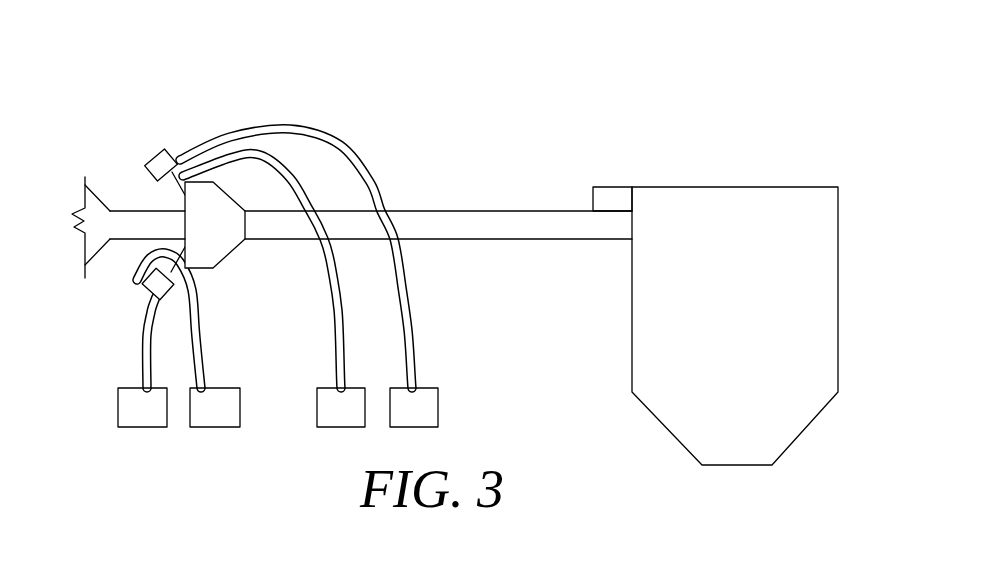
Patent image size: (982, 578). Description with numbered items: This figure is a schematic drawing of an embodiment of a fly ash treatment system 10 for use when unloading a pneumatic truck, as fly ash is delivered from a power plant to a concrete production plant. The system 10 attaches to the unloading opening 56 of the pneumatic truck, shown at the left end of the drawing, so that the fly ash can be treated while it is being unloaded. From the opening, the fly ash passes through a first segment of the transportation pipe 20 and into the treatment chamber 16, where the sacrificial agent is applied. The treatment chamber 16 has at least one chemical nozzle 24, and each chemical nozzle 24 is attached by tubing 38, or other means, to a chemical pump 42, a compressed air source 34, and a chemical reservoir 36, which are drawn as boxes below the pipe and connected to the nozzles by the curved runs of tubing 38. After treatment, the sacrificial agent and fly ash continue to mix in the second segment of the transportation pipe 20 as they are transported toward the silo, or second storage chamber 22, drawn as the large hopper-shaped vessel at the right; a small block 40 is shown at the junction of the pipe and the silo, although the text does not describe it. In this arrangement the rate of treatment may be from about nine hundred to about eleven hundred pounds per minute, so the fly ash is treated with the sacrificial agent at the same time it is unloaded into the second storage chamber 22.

The system 10 is at (506, 100).
The treatment chamber 16 is at (223, 213).
The transportation pipe 20 is at (123, 232).
The second storage chamber 22 is at (714, 288).
The chemical nozzle 24 is at (170, 190).
The compressed air source 34 is at (201, 422).
The chemical reservoir 36 is at (128, 422).
The tubing 38 is at (141, 362).
The valve 40 is at (607, 195).
The chemical pump 42 is at (160, 153).
The unloading opening 56 is at (97, 207).